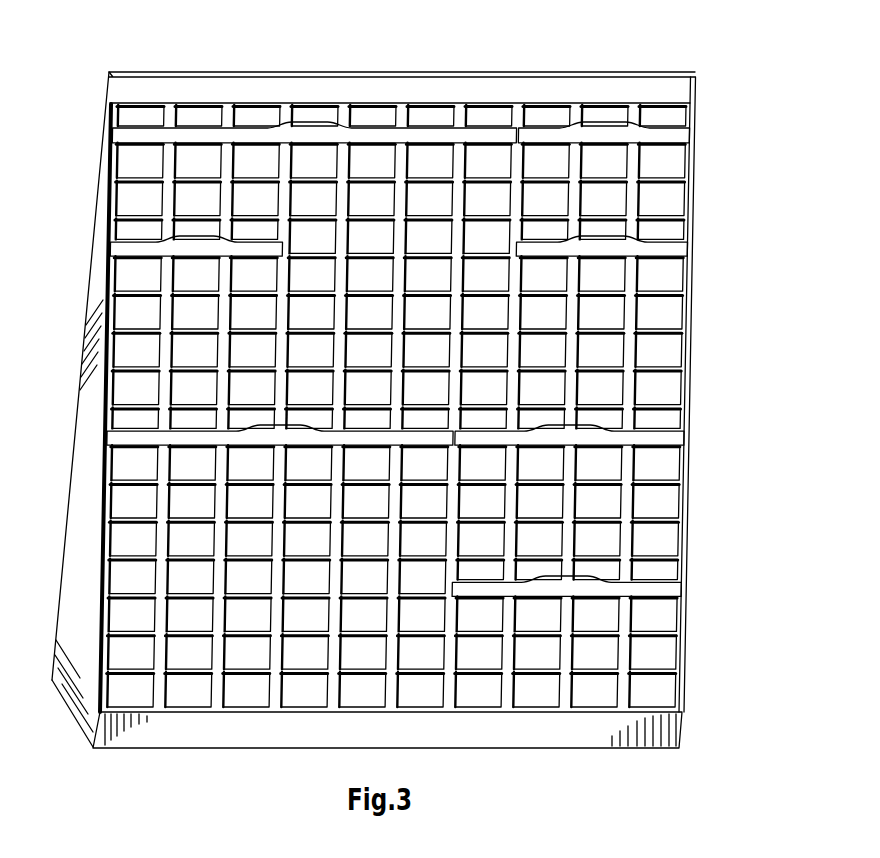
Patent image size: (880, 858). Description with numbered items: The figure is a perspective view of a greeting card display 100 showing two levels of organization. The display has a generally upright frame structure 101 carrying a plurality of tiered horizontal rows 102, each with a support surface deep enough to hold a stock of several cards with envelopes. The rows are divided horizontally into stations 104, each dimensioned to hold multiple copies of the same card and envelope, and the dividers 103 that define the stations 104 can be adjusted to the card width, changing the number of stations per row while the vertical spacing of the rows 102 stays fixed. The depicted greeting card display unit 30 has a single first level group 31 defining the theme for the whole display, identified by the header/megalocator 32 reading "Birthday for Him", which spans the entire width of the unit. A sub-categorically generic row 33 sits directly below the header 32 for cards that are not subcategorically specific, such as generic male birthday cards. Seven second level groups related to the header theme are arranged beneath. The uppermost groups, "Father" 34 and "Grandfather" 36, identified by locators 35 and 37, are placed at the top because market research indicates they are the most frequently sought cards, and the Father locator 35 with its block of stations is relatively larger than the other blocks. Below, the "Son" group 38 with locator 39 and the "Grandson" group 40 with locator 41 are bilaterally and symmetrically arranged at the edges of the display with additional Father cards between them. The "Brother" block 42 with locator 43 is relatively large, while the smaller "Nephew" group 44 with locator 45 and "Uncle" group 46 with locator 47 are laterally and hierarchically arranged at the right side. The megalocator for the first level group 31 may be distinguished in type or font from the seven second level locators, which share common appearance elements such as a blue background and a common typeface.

The greeting card display 100 is at (260, 56).
The greeting card display unit 30 is at (418, 62).
The first level group 31 is at (703, 90).
The header/megalocator 32 is at (508, 88).
The sub-categorically generic row 33 is at (703, 111).
The Father second level group 34 is at (99, 133).
The Father locator 35 is at (122, 135).
The Grandfather second level group 36 is at (703, 134).
The Grandfather locator 37 is at (660, 136).
The Son second level group 38 is at (99, 248).
The Son locator 39 is at (125, 249).
The Grandson second level group 40 is at (699, 247).
The Grandson locator 41 is at (657, 251).
The Brother second level group 42 is at (95, 436).
The Brother locator 43 is at (135, 438).
The Nephew second level group 44 is at (694, 437).
The Nephew locator 45 is at (657, 440).
The Uncle second level group 46 is at (692, 589).
The Uncle locator 47 is at (648, 591).
The frame structure 101 is at (73, 583).
The tiered horizontal rows 102 is at (96, 690).
The dividers 103 is at (158, 713).
The stations 104 is at (143, 82).